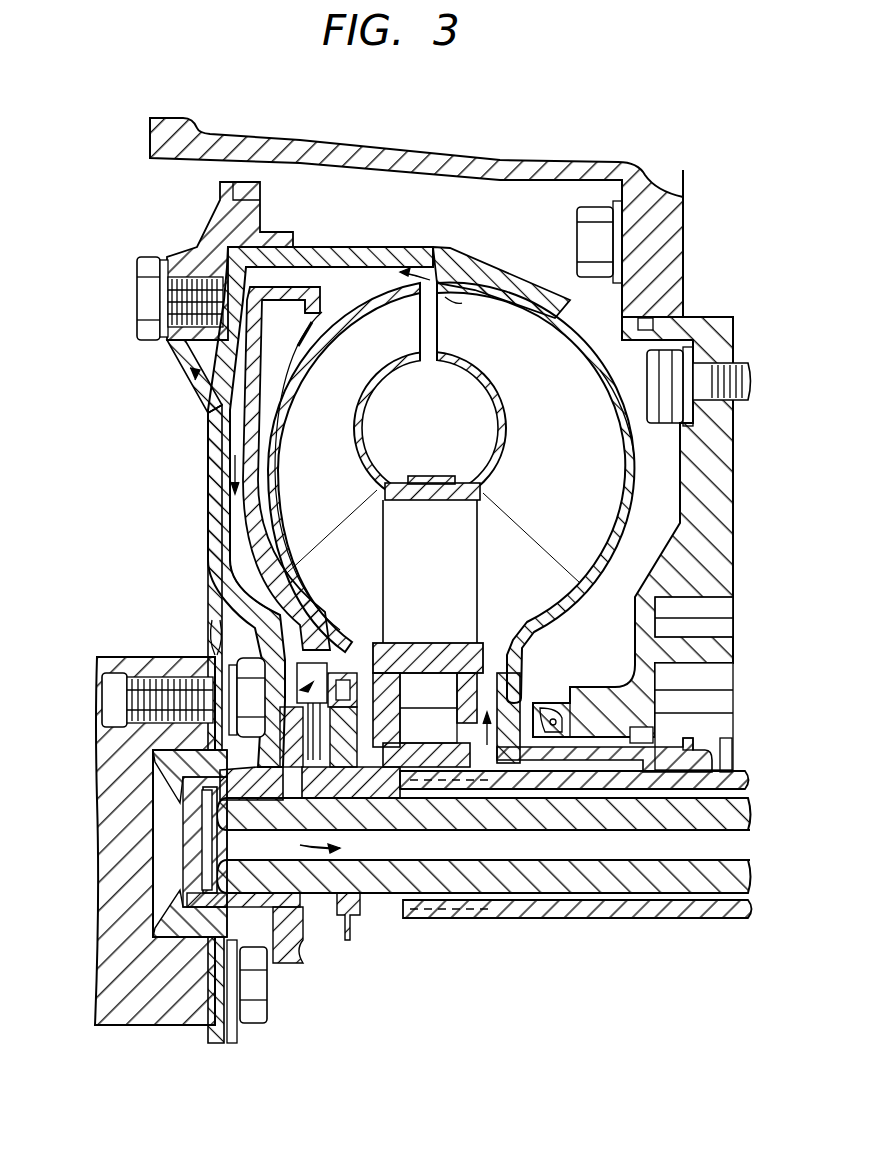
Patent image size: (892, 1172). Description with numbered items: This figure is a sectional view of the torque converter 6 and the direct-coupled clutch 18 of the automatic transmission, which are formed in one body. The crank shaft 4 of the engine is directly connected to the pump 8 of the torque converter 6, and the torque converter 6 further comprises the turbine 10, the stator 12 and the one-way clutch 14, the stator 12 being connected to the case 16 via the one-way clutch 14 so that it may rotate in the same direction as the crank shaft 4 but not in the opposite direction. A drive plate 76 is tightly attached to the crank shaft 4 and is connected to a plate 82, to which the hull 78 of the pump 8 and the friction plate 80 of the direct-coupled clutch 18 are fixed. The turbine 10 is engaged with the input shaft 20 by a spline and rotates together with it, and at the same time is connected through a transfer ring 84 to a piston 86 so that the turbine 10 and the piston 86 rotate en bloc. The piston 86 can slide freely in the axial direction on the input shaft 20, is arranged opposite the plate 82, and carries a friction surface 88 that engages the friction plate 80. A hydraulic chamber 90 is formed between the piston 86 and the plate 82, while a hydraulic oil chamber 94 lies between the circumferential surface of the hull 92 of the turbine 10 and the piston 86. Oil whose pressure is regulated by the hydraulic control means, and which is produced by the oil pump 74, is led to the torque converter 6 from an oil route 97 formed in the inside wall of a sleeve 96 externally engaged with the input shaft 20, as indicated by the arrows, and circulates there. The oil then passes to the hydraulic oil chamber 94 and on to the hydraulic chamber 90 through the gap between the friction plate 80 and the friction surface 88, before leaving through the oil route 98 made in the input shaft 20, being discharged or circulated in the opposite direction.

The crank shaft 4 is at (96, 804).
The torque converter 6 is at (501, 200).
The pump 8 is at (512, 306).
The turbine 10 is at (374, 314).
The stator 12 is at (388, 585).
The one-way clutch 14 is at (443, 742).
The case 16 is at (590, 164).
The direct-coupled clutch 18 is at (186, 389).
The input shaft 20 is at (737, 806).
The oil pump 74 is at (728, 607).
The drive plate 76 is at (204, 462).
The hull 78 is at (578, 352).
The friction plate 80 is at (200, 411).
The plate 82 is at (214, 485).
The transfer ring 84 is at (164, 362).
The piston 86 is at (248, 535).
The friction surface 88 is at (282, 396).
The hydraulic chamber 90 is at (240, 578).
The hull 92 is at (296, 364).
The hydraulic oil chamber 94 is at (300, 334).
The sleeve 96 is at (668, 738).
The oil route 97 is at (690, 771).
The oil route 98 is at (556, 854).